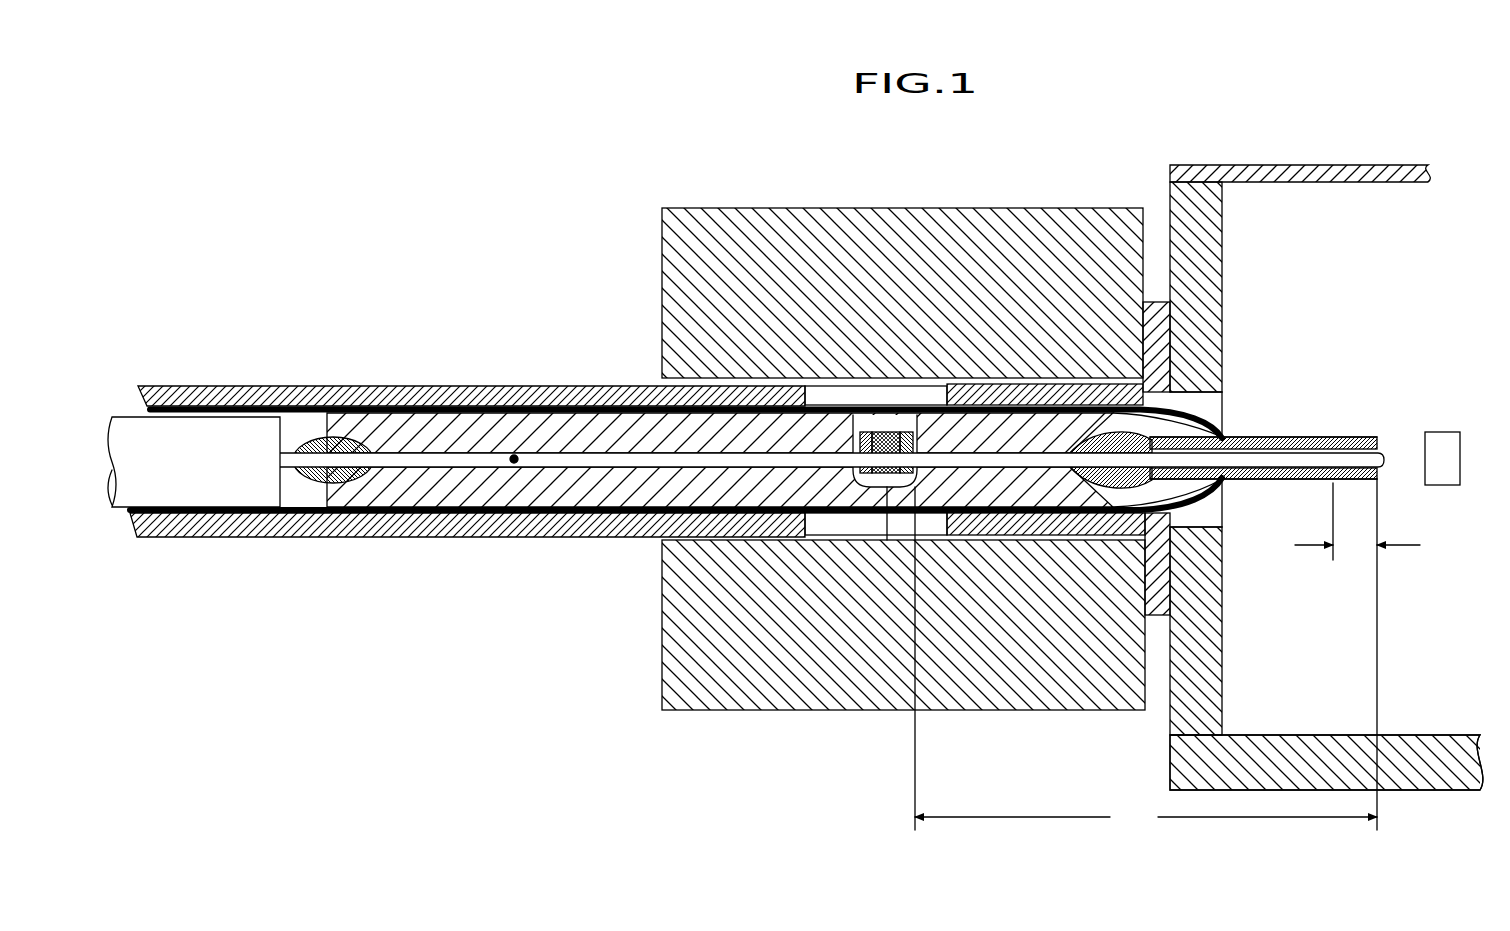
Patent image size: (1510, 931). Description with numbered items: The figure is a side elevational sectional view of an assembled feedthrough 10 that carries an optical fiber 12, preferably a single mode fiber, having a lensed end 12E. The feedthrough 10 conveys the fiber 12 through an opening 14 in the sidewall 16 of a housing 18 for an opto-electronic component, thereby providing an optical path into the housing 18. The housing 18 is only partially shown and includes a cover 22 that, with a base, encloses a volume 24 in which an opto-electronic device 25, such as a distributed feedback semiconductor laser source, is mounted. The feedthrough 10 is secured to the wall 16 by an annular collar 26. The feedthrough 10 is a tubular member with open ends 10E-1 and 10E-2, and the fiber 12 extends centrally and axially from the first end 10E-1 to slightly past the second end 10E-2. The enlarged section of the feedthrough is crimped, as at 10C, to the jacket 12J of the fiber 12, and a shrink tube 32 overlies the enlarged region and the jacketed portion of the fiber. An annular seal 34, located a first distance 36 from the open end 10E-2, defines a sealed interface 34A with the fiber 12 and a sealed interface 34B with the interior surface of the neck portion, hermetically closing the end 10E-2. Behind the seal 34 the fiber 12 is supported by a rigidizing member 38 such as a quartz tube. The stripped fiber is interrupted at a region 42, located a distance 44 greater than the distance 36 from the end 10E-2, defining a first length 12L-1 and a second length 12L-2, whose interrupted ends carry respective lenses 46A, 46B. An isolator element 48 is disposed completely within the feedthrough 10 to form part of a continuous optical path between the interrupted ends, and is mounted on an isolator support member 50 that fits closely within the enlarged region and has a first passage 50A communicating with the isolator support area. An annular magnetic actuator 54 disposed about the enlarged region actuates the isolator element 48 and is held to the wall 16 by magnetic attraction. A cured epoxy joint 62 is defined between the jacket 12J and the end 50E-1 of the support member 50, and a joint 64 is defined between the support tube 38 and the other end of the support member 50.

The feedthrough 10 is at (543, 370).
The crimp 10C is at (200, 505).
The first open end 10E-1 is at (150, 386).
The second open end 10E-2 is at (1377, 438).
The optical fiber 12 is at (514, 459).
The lensed end 12E is at (1384, 460).
The jacket 12J is at (252, 425).
The first length of optical fiber 12L-1 is at (580, 460).
The second length of optical fiber 12L-2 is at (997, 460).
The opening 14 is at (1210, 404).
The sidewall 16 is at (1213, 218).
The housing 18 is at (1327, 165).
The cover 22 is at (1370, 172).
The volume 24 is at (1359, 270).
The opto-electronic device 25 is at (1445, 430).
The annular collar 26 is at (1160, 310).
The shrink tube 32 is at (493, 386).
The annular seal 34 is at (1358, 438).
The sealed interface with fiber 34A is at (1330, 470).
The sealed interface with neck portion 34B is at (1343, 438).
The first distance 36 is at (1357, 654).
The rigidizing member 38 is at (1273, 438).
The interruption region 42 is at (887, 540).
The distance 44 is at (1146, 659).
The first lens 46A is at (832, 463).
The second lens 46B is at (957, 457).
The isolator element 48 is at (881, 414).
The isolator support member 50 is at (408, 432).
The first passage 50A is at (417, 462).
The first end of support member 50E-1 is at (335, 475).
The actuator 54 is at (700, 208).
The joint 62 is at (305, 480).
The joint 64 is at (1113, 488).